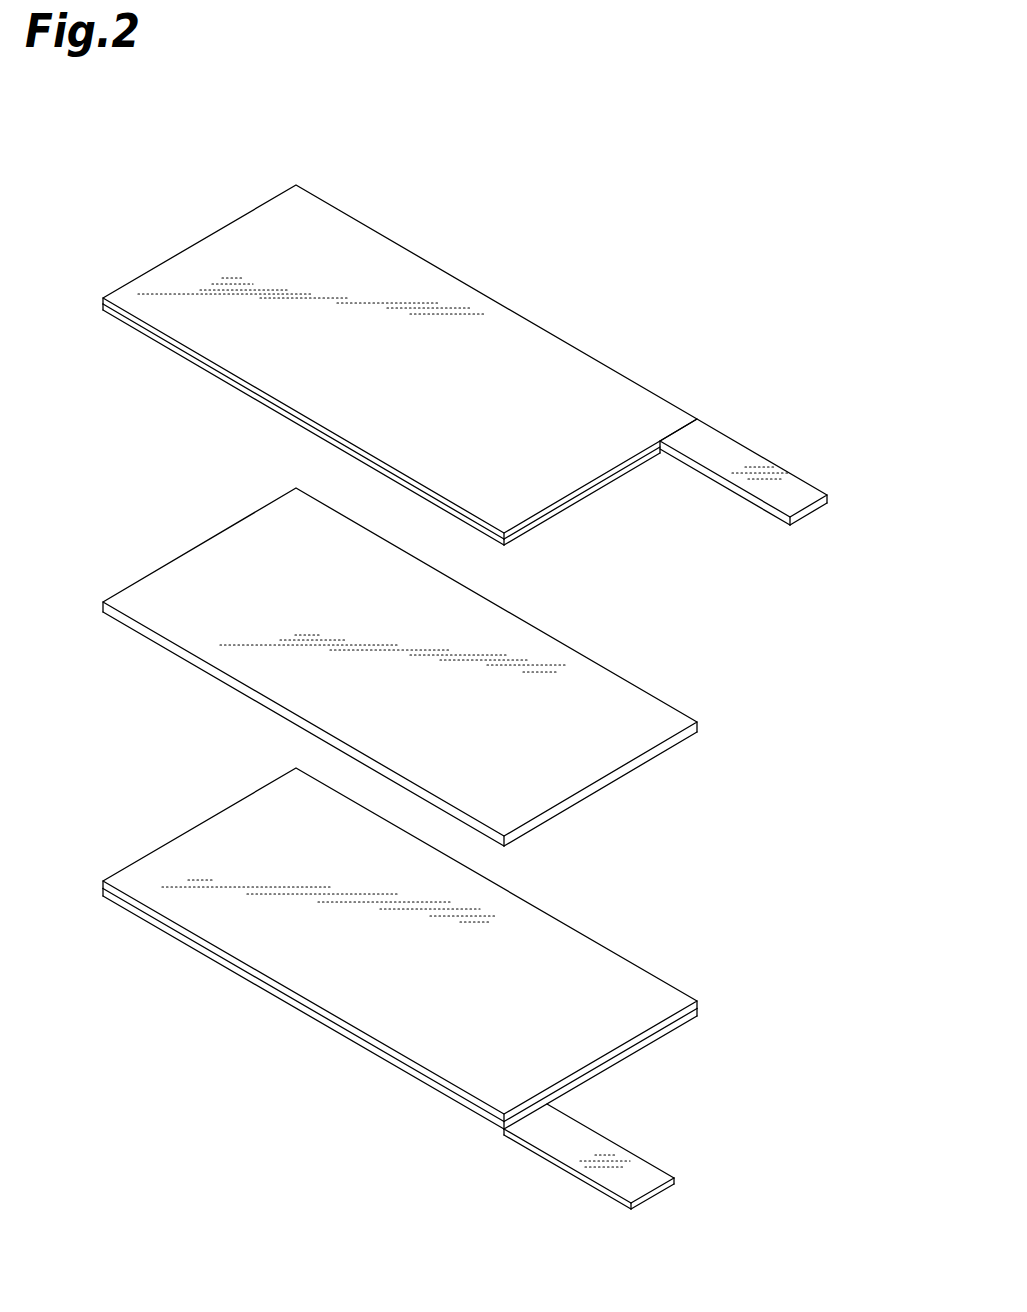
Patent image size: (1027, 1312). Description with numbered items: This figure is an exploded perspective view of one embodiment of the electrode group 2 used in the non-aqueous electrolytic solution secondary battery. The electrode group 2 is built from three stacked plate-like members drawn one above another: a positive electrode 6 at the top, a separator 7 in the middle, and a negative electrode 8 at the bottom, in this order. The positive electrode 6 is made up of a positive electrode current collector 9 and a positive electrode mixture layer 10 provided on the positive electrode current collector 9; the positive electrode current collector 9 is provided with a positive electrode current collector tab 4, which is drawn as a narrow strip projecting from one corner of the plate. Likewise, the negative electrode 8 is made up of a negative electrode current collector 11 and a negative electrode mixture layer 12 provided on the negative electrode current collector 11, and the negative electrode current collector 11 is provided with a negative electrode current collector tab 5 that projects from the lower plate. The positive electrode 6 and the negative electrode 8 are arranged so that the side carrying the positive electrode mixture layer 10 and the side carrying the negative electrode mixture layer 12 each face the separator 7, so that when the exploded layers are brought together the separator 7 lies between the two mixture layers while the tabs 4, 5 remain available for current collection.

The electrode group 2 is at (692, 200).
The positive electrode current collector tab 4 is at (793, 498).
The negative electrode current collector tab 5 is at (635, 1180).
The positive electrode 6 is at (668, 357).
The separator 7 is at (633, 703).
The negative electrode 8 is at (668, 955).
The positive electrode current collector 9 is at (335, 229).
The positive electrode mixture layer 10 is at (583, 498).
The negative electrode current collector 11 is at (600, 1072).
The negative electrode mixture layer 12 is at (620, 1017).